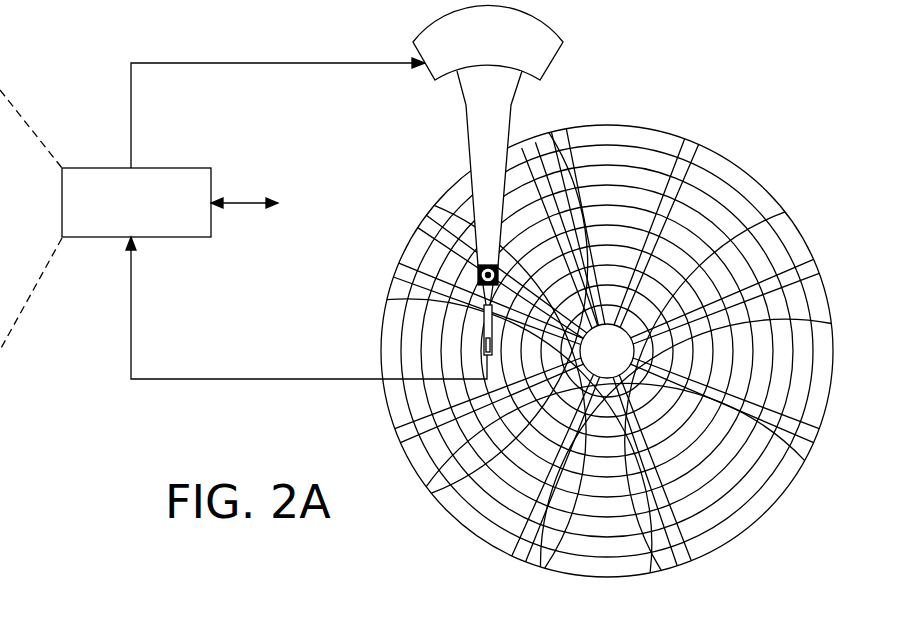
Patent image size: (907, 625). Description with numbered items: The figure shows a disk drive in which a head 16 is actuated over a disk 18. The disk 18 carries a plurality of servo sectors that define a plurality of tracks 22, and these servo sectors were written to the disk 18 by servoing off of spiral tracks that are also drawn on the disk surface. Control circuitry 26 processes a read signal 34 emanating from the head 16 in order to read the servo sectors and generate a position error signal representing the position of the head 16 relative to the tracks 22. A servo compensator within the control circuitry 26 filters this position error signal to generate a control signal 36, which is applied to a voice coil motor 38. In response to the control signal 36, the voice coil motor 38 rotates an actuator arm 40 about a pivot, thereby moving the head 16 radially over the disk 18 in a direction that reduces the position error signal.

The head 16 is at (481, 340).
The disk 18 is at (761, 174).
The tracks 22 is at (608, 150).
The control circuitry 26 is at (175, 168).
The read signal 34 is at (271, 379).
The control signal 36 is at (131, 121).
The voice coil motor 38 is at (435, 80).
The actuator arm 40 is at (469, 152).